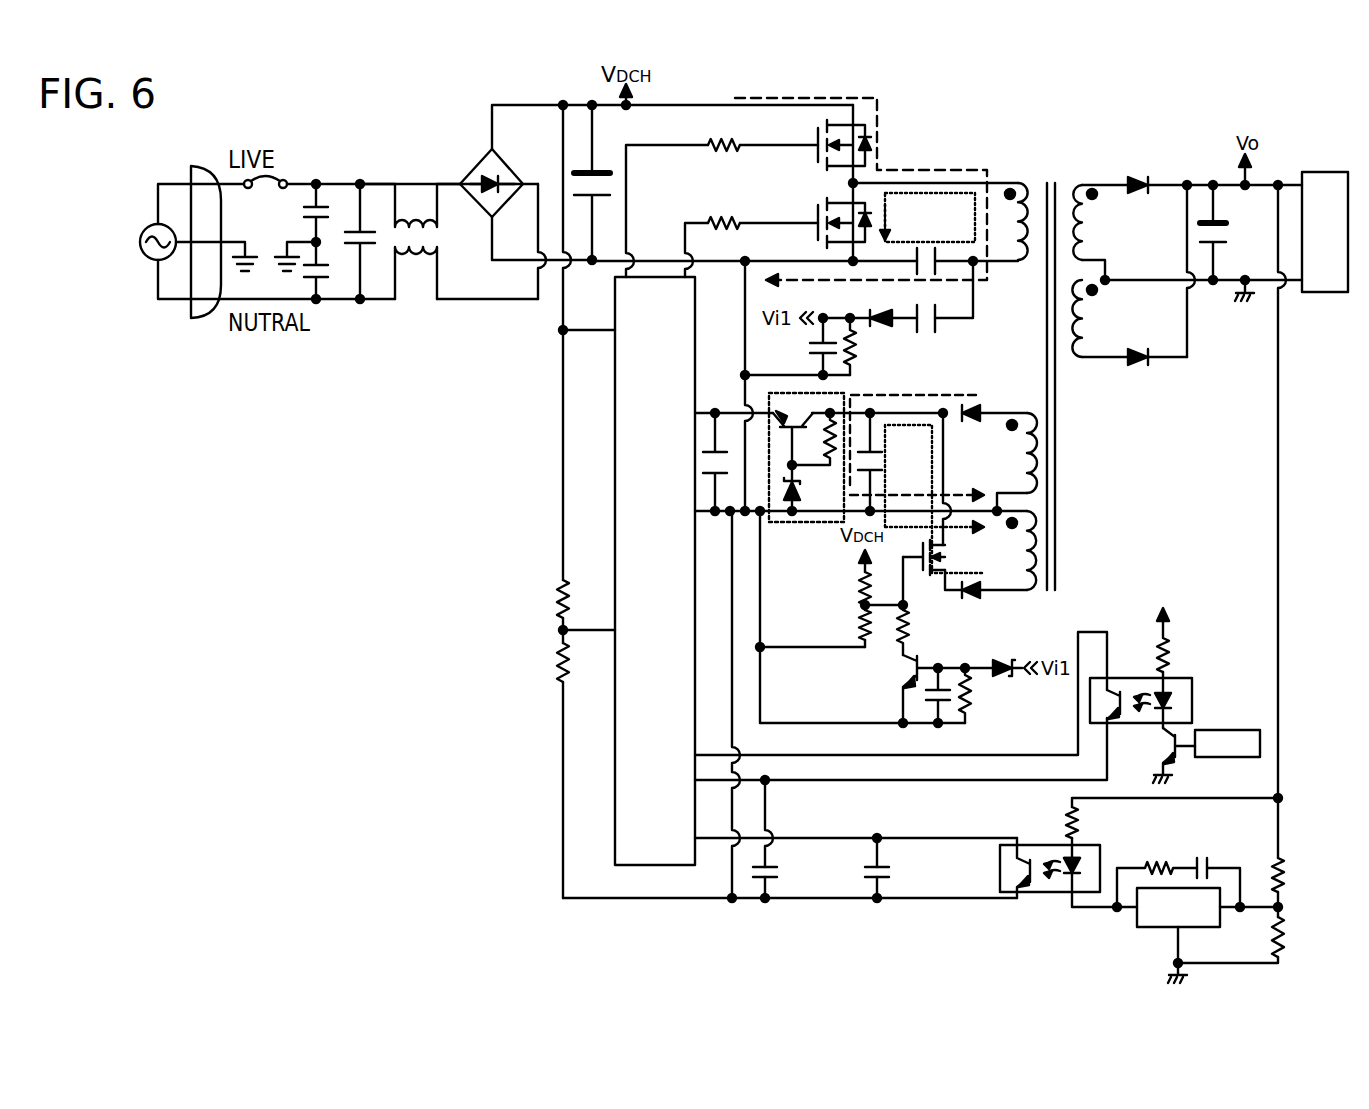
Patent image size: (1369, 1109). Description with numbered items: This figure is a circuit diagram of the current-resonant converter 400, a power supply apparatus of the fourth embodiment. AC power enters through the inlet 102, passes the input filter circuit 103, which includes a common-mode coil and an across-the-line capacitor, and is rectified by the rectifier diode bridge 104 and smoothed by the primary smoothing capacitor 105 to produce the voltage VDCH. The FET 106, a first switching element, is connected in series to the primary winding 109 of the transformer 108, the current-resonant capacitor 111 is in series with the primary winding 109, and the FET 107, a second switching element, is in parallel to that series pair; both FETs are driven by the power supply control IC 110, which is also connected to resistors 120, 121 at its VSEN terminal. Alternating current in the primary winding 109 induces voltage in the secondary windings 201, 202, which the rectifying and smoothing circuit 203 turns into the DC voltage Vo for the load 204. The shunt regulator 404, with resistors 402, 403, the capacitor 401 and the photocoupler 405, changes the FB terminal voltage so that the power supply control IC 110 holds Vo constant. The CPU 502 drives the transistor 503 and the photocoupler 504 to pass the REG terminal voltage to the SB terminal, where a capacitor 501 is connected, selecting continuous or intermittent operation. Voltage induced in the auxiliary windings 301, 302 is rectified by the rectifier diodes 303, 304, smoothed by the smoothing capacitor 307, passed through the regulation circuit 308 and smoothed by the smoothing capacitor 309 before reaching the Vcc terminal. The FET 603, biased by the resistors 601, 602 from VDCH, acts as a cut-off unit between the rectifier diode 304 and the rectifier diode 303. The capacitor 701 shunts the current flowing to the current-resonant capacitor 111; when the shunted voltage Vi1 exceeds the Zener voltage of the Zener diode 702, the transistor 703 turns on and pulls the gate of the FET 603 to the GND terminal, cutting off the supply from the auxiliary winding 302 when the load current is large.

The inlet 102 is at (196, 172).
The input filter circuit 103 is at (362, 172).
The rectifier diode bridge 104 is at (470, 166).
The primary smoothing capacitor 105 is at (609, 183).
The FET 106 is at (812, 154).
The FET 107 is at (812, 214).
The transformer 108 is at (1057, 172).
The primary winding 109 is at (1013, 172).
The power supply control IC 110 is at (608, 666).
The current-resonant capacitor 111 is at (926, 249).
The voltage dividing resistor 120 is at (551, 598).
The voltage dividing resistor 121 is at (551, 663).
The secondary winding 201 is at (1092, 252).
The secondary winding 202 is at (1092, 340).
The rectifying and smoothing circuit 203 is at (1176, 172).
The load 204 is at (1319, 170).
The auxiliary winding 301 is at (1015, 466).
The auxiliary winding 302 is at (1015, 578).
The rectifier diode 303 is at (988, 405).
The rectifier diode 304 is at (986, 598).
The smoothing capacitor 307 is at (880, 452).
The regulation circuit 308 is at (789, 524).
The smoothing capacitor 309 is at (712, 522).
The current-resonant converter 400 is at (919, 144).
The capacitor 401 is at (893, 876).
The resistor 402 is at (1292, 878).
The resistor 403 is at (1292, 940).
The shunt regulator 404 is at (1150, 936).
The photocoupler 405 is at (1112, 857).
The capacitor 501 is at (781, 876).
The CPU 502 is at (1217, 717).
The transistor 503 is at (1181, 762).
The photocoupler 504 is at (1188, 676).
The resistor 601 is at (851, 592).
The resistor 602 is at (851, 625).
The FET 603 is at (940, 581).
The capacitor 701 is at (927, 340).
The Zener diode 702 is at (1005, 694).
The transistor 703 is at (896, 675).